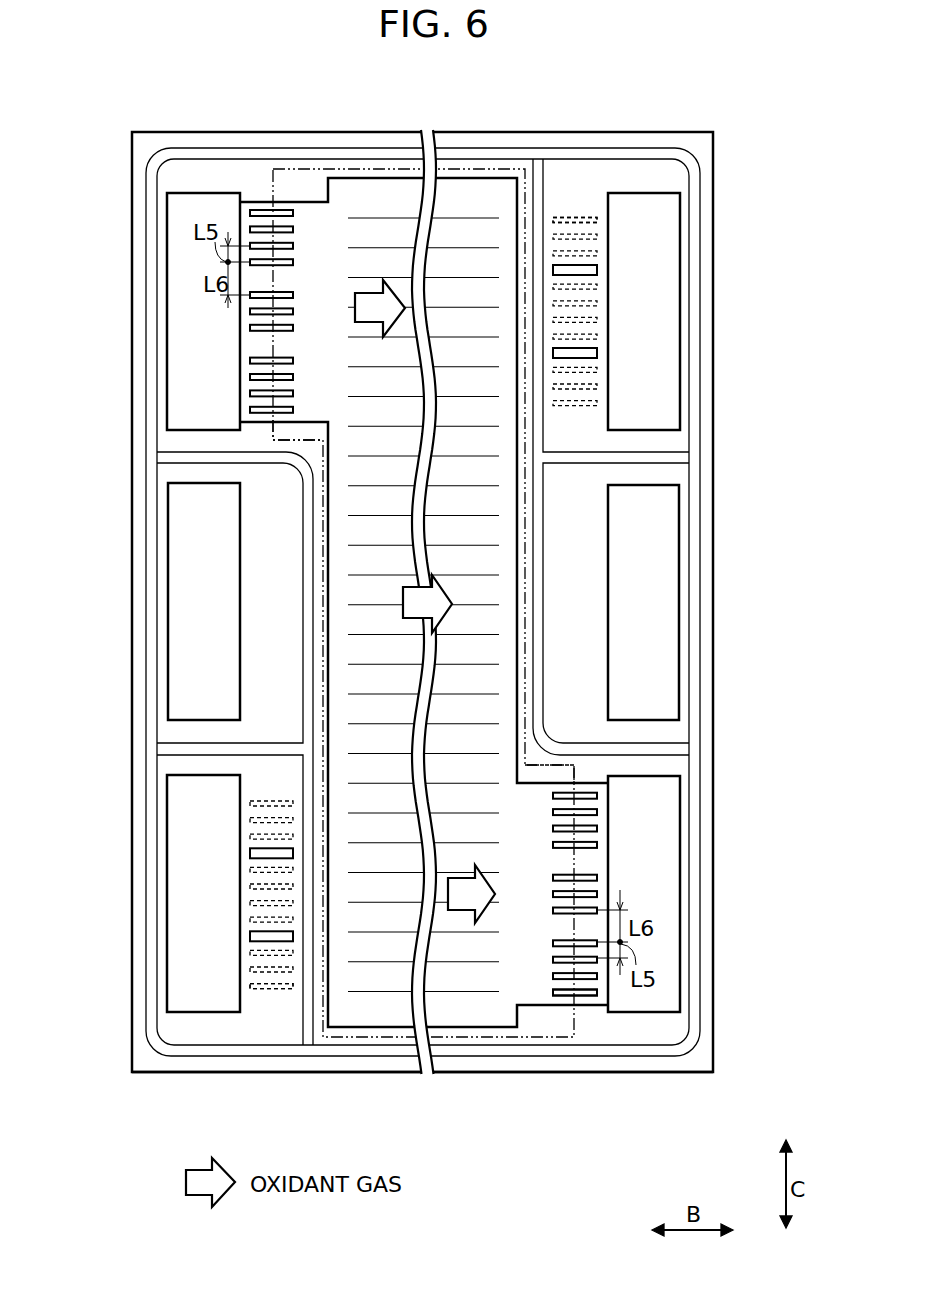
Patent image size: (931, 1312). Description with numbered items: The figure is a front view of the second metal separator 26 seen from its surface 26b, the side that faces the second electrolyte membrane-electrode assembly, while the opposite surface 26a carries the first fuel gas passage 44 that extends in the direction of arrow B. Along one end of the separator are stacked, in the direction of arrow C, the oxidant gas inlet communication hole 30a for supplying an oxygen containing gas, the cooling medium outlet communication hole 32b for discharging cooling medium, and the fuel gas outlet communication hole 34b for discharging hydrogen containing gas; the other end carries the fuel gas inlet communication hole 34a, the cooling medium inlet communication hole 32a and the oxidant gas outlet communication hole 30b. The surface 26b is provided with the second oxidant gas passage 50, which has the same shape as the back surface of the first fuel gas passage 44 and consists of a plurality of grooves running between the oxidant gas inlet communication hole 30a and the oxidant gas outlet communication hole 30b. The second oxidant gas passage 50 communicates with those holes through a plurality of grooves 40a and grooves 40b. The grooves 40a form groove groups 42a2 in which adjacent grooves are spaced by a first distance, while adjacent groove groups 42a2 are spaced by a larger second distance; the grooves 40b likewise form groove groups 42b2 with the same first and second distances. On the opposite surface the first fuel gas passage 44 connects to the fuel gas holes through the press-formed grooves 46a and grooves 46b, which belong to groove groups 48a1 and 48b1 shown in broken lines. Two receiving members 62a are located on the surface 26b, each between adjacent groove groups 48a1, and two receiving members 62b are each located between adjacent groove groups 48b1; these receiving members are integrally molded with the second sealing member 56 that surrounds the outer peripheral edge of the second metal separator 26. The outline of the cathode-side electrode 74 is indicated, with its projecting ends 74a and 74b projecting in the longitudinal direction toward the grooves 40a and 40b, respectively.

The second metal separator 26 is at (526, 67).
The surface of the second metal separator 26a is at (247, 1067).
The surface of the second metal separator 26b is at (178, 1067).
The oxidant gas inlet communication hole 30a is at (177, 284).
The oxidant gas outlet communication hole 30b is at (668, 870).
The cooling medium inlet communication hole 32a is at (672, 548).
The cooling medium outlet communication hole 32b is at (178, 553).
The fuel gas inlet communication hole 34a is at (668, 309).
The fuel gas outlet communication hole 34b is at (178, 884).
The grooves 40a is at (258, 362).
The grooves 40b is at (590, 830).
The groove groups 42a2 is at (257, 207).
The groove groups 42b2 is at (588, 1001).
The first fuel gas passage 44 is at (376, 583).
The grooves 46a is at (585, 217).
The grooves 46b is at (262, 986).
The groove groups 48a1 is at (565, 208).
The groove groups 48b1 is at (282, 1001).
The second oxidant gas passage 50 is at (376, 620).
The second sealing member 56 is at (683, 132).
The receiving members 62a is at (587, 271).
The receiving members 62b is at (257, 853).
The cathode-side electrode 74 is at (378, 166).
The projecting end 74a is at (287, 441).
The projecting end 74b is at (560, 763).